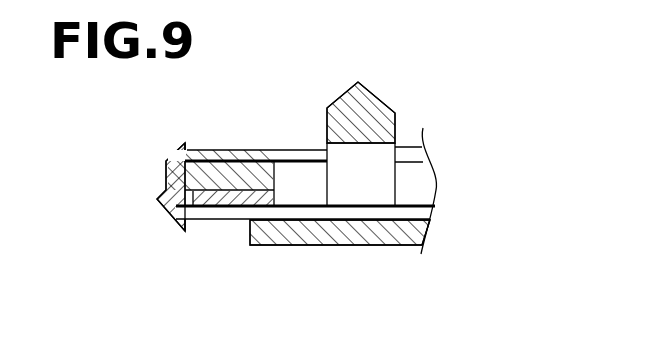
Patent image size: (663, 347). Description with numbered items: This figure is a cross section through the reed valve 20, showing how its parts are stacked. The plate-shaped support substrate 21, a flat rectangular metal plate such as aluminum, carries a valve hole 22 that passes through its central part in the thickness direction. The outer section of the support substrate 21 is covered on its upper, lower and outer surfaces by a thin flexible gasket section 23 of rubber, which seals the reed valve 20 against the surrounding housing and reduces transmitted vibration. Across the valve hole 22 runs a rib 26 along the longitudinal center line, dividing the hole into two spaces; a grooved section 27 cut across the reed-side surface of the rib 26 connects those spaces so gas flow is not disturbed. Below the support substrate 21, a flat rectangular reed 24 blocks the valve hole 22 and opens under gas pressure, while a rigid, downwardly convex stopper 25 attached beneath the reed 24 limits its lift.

The reed valve 20 is at (401, 62).
The support substrate 21 is at (223, 165).
The valve hole 22 is at (298, 180).
The gasket section 23 is at (165, 170).
The reed 24 is at (410, 227).
The stopper 25 is at (303, 243).
The rib 26 is at (395, 112).
The grooved section 27 is at (362, 187).